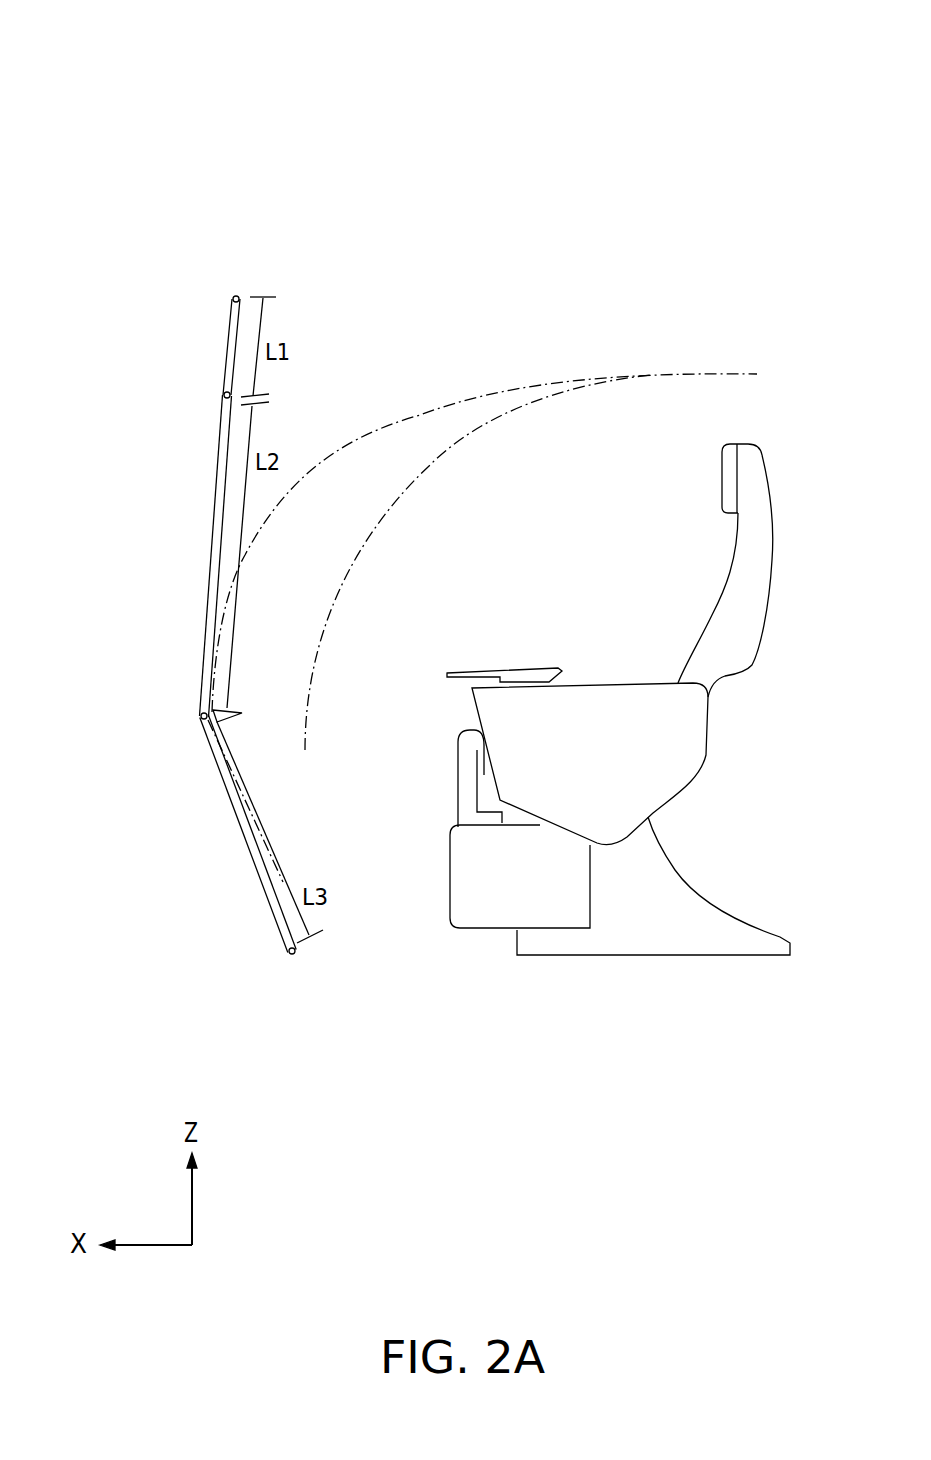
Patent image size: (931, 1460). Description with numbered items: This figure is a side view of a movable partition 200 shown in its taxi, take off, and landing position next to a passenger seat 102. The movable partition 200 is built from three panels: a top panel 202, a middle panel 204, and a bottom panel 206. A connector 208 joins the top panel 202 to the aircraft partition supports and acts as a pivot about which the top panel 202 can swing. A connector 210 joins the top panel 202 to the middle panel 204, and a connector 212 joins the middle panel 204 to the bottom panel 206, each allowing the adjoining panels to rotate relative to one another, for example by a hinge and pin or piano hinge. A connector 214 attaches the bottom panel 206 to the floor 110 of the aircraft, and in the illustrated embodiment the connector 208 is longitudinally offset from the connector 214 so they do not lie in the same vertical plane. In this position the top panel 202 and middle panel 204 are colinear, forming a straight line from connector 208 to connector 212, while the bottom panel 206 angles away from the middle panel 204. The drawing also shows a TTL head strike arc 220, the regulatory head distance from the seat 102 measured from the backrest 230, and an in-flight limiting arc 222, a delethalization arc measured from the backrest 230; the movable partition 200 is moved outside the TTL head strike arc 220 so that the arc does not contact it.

The movable partition 200 is at (297, 105).
The top panel 202 is at (232, 348).
The middle panel 204 is at (206, 638).
The bottom panel 206 is at (253, 862).
The connector 208 is at (233, 299).
The connector 210 is at (224, 395).
The connector 212 is at (202, 719).
The connector 214 is at (294, 953).
The TTL head strike arc 220 is at (478, 392).
The in-flight limiting arc 222 is at (702, 373).
The backrest 230 is at (712, 613).
The seat 102 is at (623, 699).
The floor 110 is at (406, 1089).